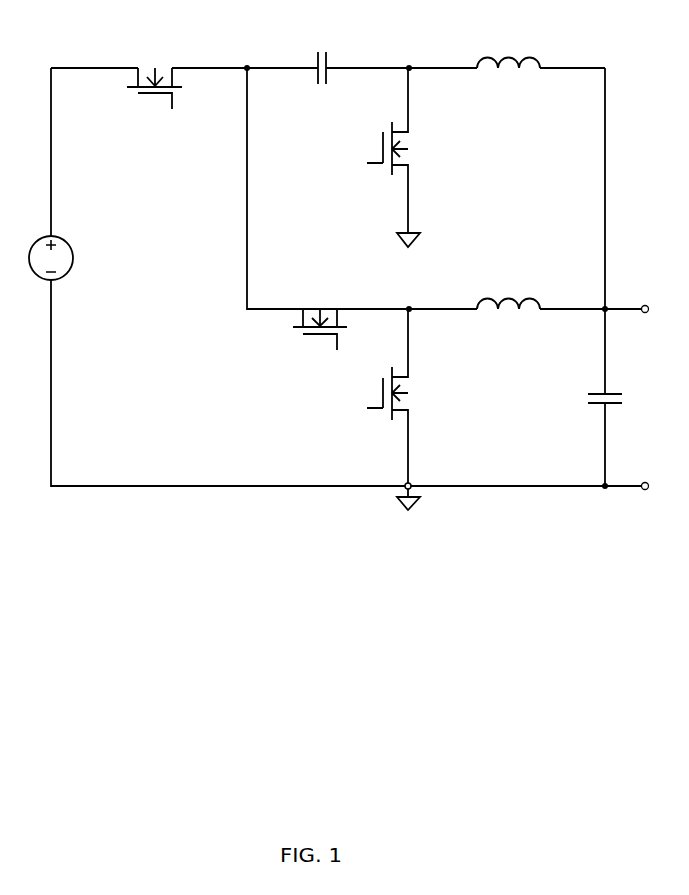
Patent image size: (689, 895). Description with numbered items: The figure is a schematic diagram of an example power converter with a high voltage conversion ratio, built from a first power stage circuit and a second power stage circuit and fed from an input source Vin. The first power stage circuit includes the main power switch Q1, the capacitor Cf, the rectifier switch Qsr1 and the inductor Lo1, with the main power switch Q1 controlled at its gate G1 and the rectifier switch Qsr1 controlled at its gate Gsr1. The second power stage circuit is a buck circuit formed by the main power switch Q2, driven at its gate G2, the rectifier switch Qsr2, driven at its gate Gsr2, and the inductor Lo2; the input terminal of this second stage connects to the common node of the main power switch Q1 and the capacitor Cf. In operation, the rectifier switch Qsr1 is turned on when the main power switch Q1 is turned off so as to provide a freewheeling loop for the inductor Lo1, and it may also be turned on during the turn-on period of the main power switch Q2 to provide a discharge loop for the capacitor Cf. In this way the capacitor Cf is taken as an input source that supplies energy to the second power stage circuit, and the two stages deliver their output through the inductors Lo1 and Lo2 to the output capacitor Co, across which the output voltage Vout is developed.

The input voltage source Vin is at (78, 258).
The main power switch Q1 is at (155, 62).
The gate of first switch G1 is at (168, 118).
The capacitor Cf is at (328, 51).
The inductor Lo1 is at (508, 47).
The rectifier switch Qsr1 is at (432, 157).
The gate of first synchronous rectifier Gsr1 is at (352, 153).
The main power switch Q2 is at (320, 303).
The gate of second switch G2 is at (325, 353).
The inductor Lo2 is at (508, 290).
The rectifier switch Qsr2 is at (433, 409).
The gate of second synchronous rectifier Gsr2 is at (352, 399).
The output capacitor Co is at (593, 403).
The output voltage Vout is at (646, 397).